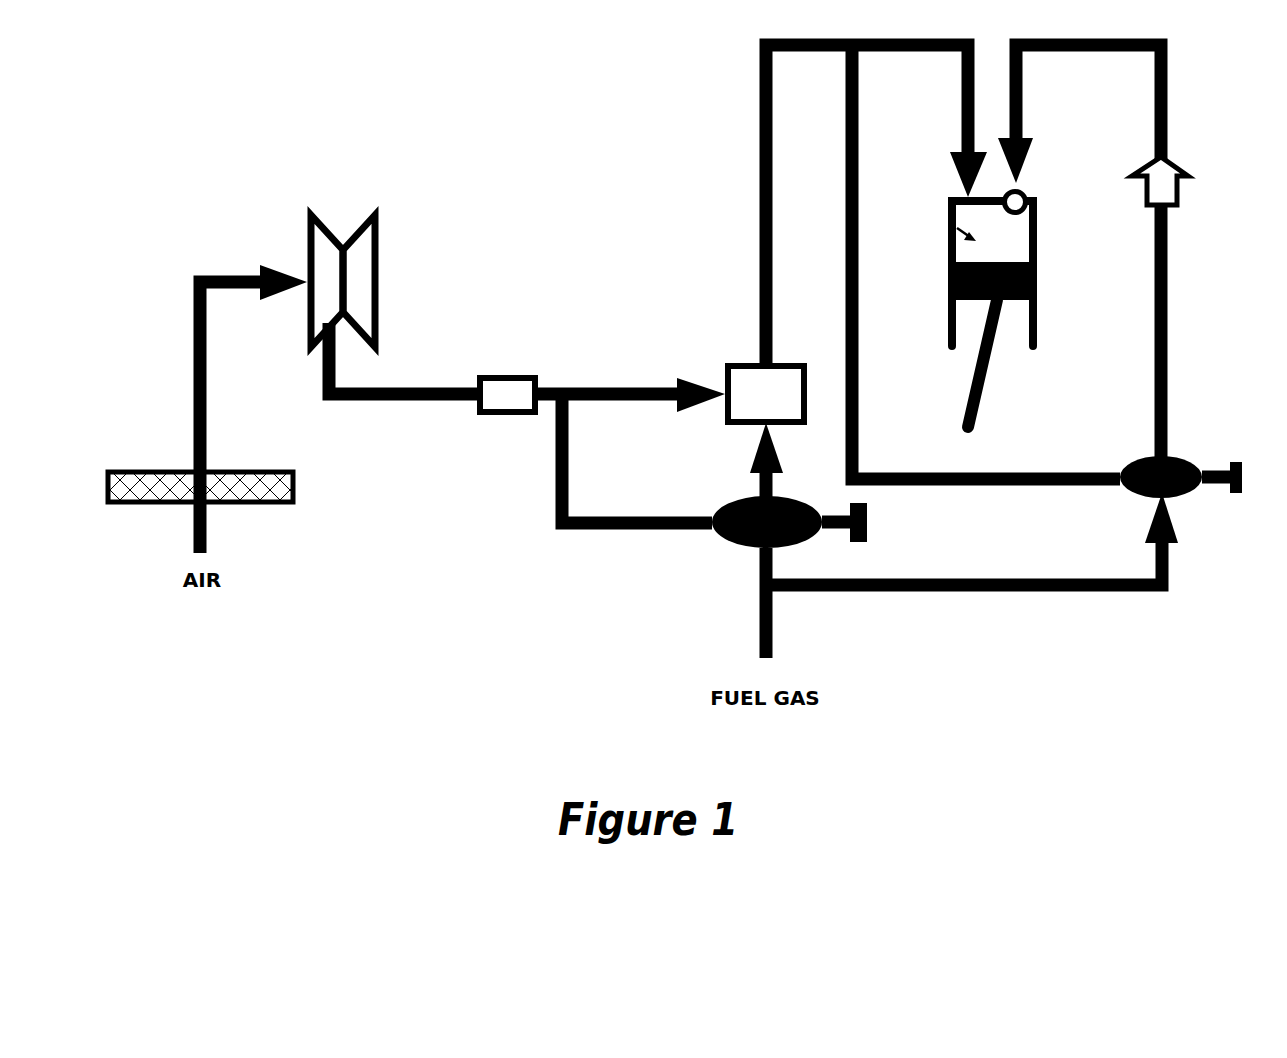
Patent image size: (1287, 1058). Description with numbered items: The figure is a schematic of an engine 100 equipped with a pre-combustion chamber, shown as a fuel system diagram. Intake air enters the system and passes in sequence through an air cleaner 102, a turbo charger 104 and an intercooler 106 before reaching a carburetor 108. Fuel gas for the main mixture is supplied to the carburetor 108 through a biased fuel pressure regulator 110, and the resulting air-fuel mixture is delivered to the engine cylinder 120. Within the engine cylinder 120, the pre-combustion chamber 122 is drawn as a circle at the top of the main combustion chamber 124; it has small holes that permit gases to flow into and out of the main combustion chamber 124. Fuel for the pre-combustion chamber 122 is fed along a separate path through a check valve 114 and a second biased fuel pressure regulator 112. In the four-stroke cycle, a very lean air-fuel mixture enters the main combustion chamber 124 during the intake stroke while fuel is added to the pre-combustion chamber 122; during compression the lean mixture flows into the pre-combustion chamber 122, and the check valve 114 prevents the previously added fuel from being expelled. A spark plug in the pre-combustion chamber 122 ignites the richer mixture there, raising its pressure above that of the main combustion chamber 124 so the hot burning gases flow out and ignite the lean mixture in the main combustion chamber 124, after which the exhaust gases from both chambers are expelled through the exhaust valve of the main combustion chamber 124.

The engine 100 is at (557, 153).
The air cleaner 102 is at (148, 470).
The turbo charger 104 is at (307, 250).
The intercooler 106 is at (493, 368).
The carburetor 108 is at (745, 362).
The biased fuel pressure regulator 110 is at (722, 500).
The biased fuel pressure regulator 112 is at (1195, 495).
The check valve 114 is at (1180, 170).
The engine cylinder 120 is at (948, 285).
The pre-combustion chamber 122 is at (1025, 195).
The main combustion chamber 124 is at (948, 210).